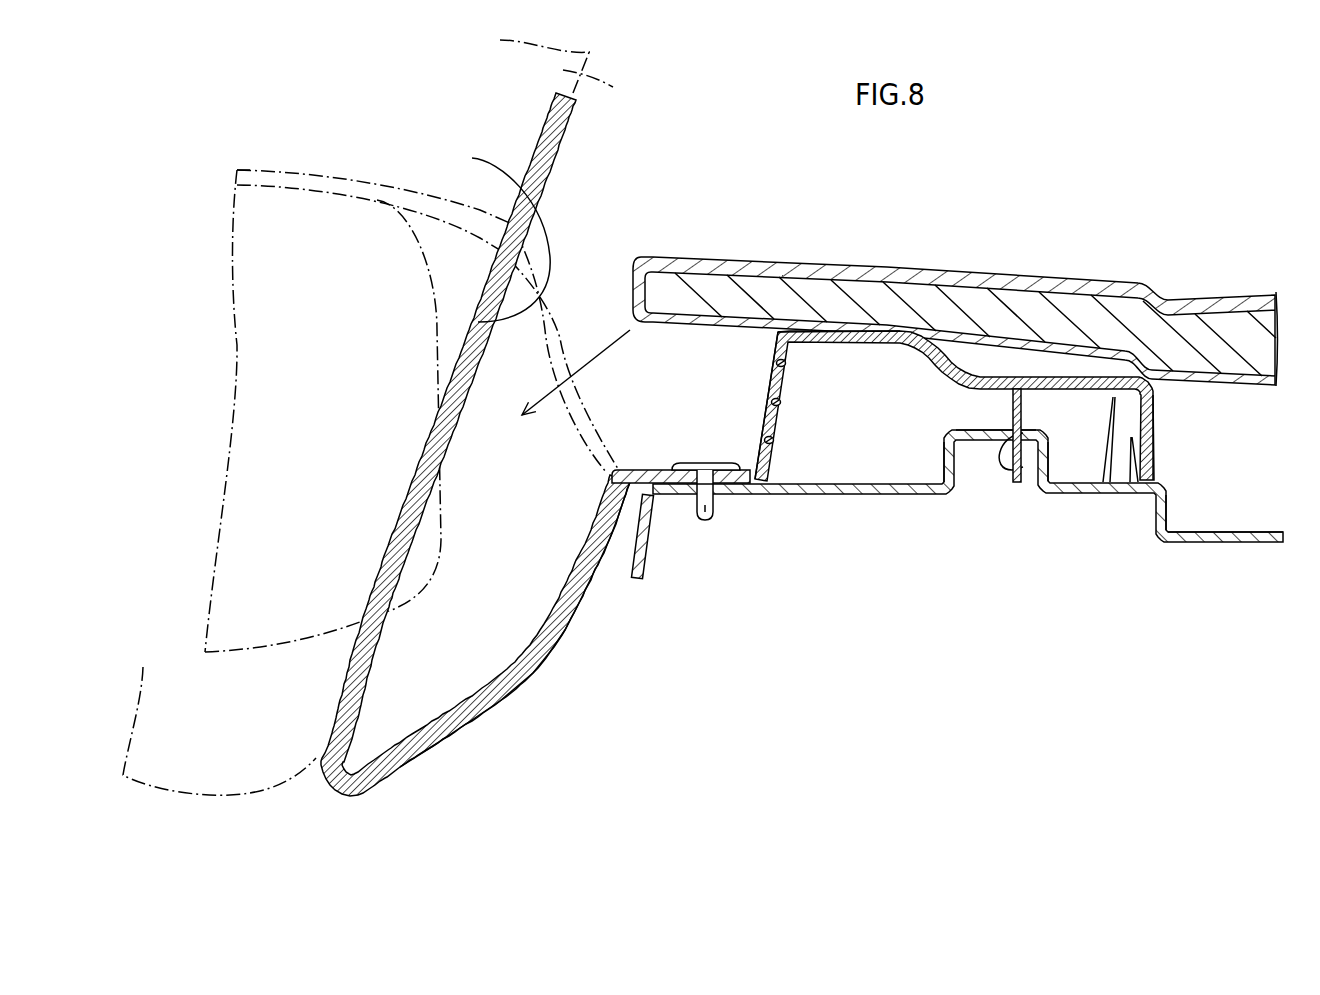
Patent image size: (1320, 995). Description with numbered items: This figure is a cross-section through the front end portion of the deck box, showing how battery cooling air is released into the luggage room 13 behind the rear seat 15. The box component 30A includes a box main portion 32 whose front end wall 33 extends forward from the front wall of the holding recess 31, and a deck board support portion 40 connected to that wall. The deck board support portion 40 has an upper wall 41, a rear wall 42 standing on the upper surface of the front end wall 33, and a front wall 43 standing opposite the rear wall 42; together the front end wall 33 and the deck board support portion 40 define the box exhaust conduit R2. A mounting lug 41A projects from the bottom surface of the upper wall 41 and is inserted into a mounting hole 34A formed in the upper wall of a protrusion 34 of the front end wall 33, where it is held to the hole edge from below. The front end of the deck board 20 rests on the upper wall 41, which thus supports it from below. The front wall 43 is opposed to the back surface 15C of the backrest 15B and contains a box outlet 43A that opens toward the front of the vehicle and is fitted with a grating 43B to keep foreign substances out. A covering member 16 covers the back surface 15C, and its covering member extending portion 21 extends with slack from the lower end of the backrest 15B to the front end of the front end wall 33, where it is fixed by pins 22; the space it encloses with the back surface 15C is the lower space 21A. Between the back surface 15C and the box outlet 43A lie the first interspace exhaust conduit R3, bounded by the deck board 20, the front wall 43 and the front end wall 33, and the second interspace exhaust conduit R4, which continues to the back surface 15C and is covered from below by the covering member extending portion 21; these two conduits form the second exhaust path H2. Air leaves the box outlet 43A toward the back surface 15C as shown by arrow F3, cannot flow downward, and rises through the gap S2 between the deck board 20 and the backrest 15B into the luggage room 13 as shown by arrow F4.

The luggage room 13 is at (1068, 233).
The rear seat 15 is at (562, 37).
The backrest 15B is at (613, 87).
The back surface 15C is at (490, 231).
The covering member 16 is at (557, 153).
The deck board 20 is at (1217, 323).
The covering member extending portion 21 is at (533, 673).
The lower space 21A is at (565, 600).
The pin 22 is at (703, 520).
The box component 30A is at (1173, 550).
The holding recess 31 is at (1207, 497).
The box main portion 32 is at (1257, 543).
The front end wall 33 is at (887, 494).
The protrusion 34 is at (963, 442).
The mounting hole 34A is at (1000, 470).
The deck board support portion 40 is at (977, 360).
The upper wall 41 is at (890, 332).
The mounting lug 41A is at (1018, 483).
The rear wall 42 is at (1153, 413).
The front wall 43 is at (763, 483).
The box outlet 43A is at (780, 350).
The grating 43B is at (778, 403).
The gap S2 is at (617, 340).
The second exhaust path H2 is at (750, 178).
The box exhaust conduit R2 is at (890, 443).
The first interspace exhaust conduit R3 is at (695, 335).
The second interspace exhaust conduit R4 is at (684, 404).
The arrow F3 is at (813, 425).
The arrow F4 is at (565, 330).